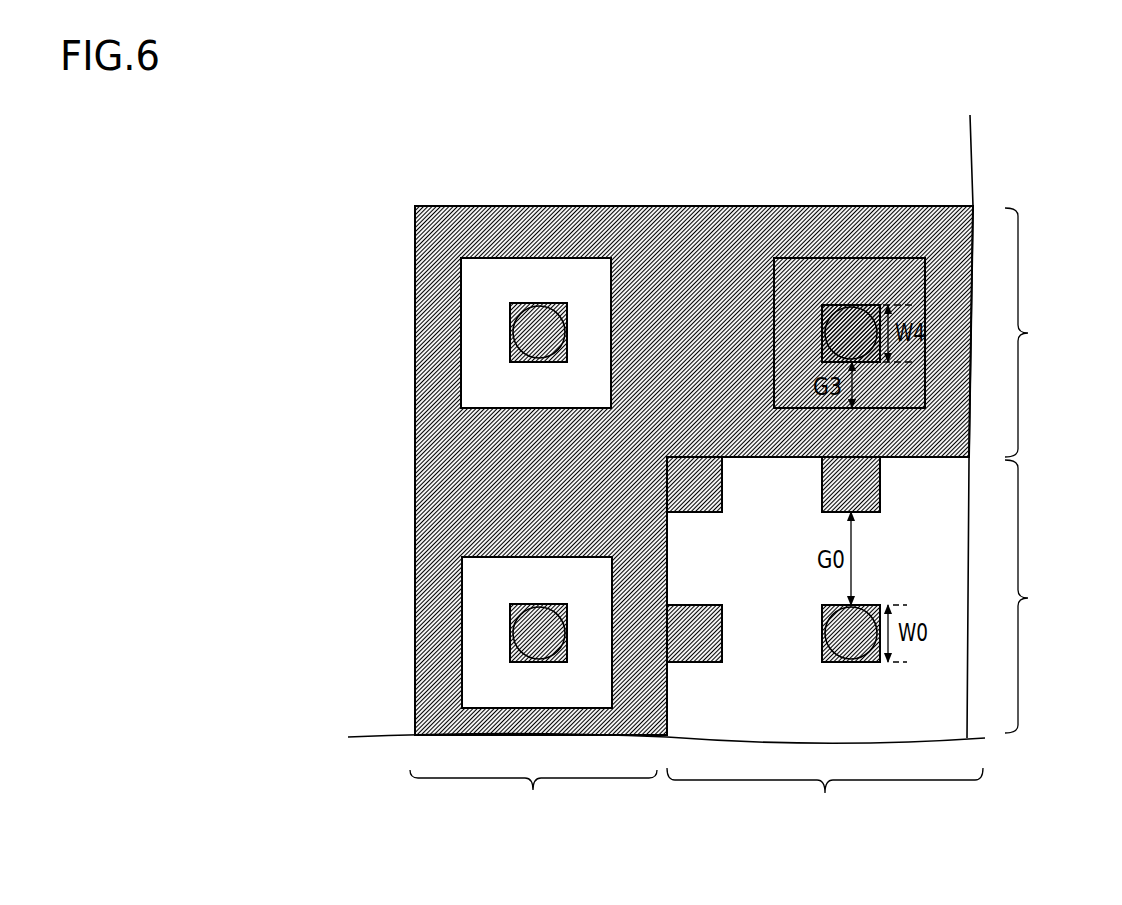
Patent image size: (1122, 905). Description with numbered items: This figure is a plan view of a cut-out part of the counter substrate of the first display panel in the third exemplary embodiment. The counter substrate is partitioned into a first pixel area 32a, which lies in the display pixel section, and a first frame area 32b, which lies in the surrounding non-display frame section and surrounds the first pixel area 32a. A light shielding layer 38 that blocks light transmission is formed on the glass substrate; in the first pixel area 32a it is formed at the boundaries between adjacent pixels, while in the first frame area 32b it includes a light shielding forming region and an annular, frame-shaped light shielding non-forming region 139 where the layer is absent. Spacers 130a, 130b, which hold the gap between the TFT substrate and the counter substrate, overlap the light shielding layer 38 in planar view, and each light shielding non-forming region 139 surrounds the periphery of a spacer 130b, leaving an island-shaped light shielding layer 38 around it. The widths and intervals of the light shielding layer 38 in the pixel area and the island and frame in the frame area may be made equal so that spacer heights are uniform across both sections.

The light shielding layer 38 is at (706, 232).
The spacer 130a is at (866, 603).
The spacer 130b is at (537, 302).
The light shielding non-forming region 139 is at (847, 278).
The first pixel area 32a is at (876, 648).
The first frame area 32b is at (747, 519).